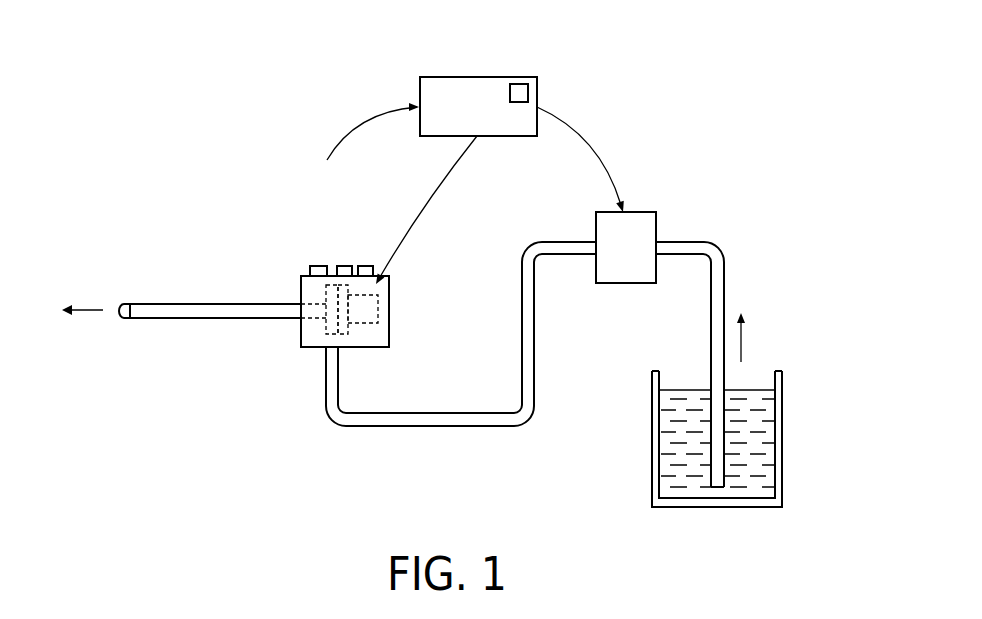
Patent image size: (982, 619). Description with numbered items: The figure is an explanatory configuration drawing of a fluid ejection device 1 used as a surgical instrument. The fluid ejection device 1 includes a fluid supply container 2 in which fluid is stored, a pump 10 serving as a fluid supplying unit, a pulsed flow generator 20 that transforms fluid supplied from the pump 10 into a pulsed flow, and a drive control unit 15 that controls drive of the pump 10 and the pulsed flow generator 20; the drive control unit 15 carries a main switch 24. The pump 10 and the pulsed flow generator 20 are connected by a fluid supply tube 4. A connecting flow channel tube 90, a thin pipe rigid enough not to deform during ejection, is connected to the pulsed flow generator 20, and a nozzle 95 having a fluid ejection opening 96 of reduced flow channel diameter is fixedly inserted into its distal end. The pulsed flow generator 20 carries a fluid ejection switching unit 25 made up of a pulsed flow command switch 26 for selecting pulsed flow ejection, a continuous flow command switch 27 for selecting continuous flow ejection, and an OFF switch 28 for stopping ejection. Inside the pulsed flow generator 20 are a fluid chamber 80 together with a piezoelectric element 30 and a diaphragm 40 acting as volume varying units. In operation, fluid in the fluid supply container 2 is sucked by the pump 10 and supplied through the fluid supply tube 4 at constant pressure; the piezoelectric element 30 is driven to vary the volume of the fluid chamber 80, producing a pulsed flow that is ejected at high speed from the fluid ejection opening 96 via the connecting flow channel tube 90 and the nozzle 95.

The fluid ejection device 1 is at (659, 61).
The fluid supply container 2 is at (782, 432).
The fluid supply tube 4 is at (458, 412).
The pump 10 is at (632, 211).
The drive control unit 15 is at (477, 77).
The pulsed flow generator 20 is at (361, 281).
The main switch 24 is at (520, 84).
The fluid ejection switching unit 25 is at (325, 215).
The pulsed flow command switch 26 is at (313, 265).
The continuous flow command switch 27 is at (341, 265).
The OFF switch 28 is at (365, 236).
The piezoelectric element 30 is at (372, 326).
The diaphragm 40 is at (343, 333).
The fluid chamber 80 is at (321, 332).
The connecting flow channel tube 90 is at (218, 303).
The nozzle 95 is at (131, 303).
The fluid ejection opening 96 is at (111, 319).